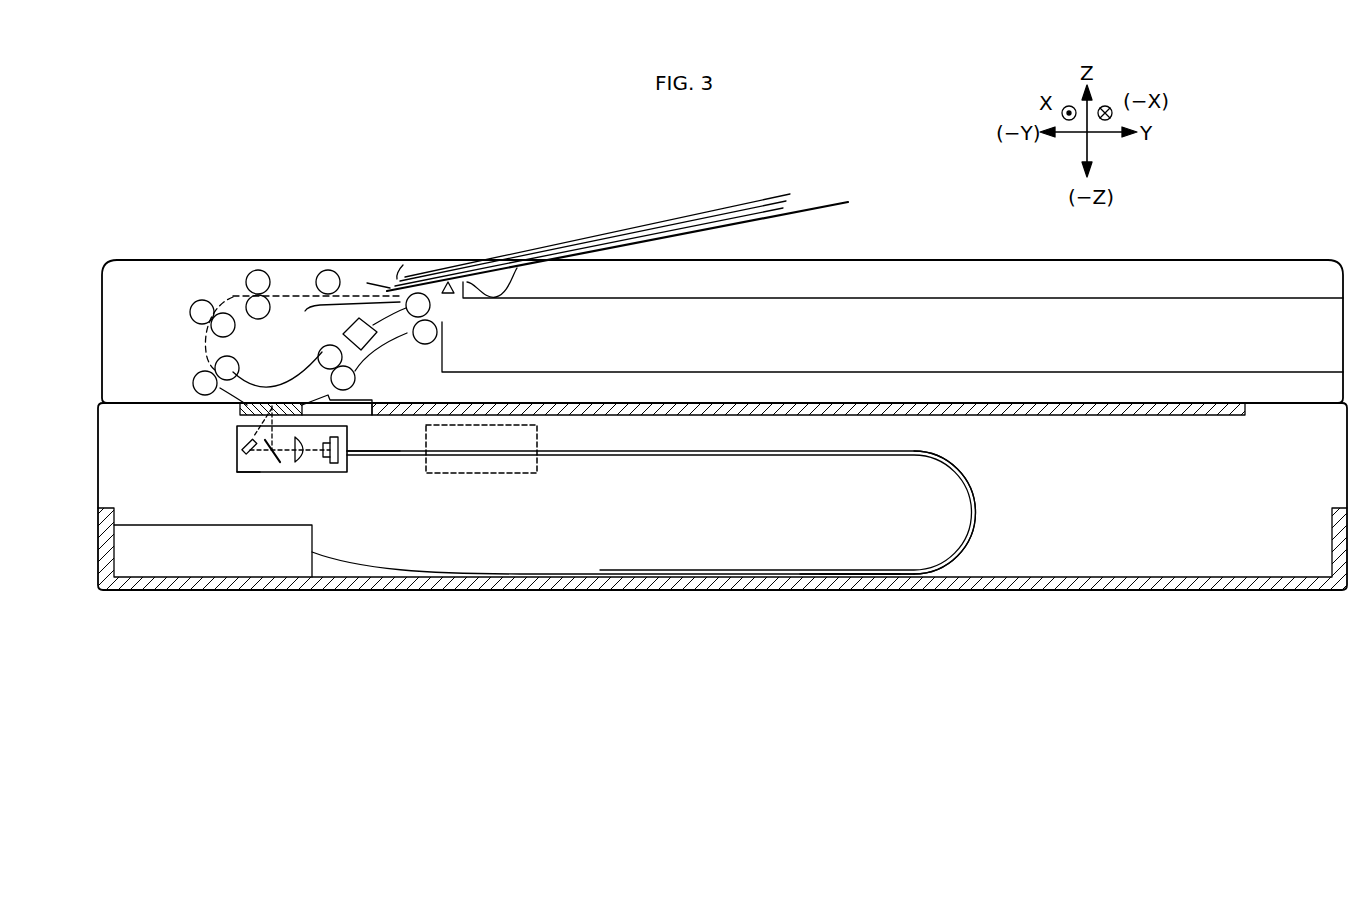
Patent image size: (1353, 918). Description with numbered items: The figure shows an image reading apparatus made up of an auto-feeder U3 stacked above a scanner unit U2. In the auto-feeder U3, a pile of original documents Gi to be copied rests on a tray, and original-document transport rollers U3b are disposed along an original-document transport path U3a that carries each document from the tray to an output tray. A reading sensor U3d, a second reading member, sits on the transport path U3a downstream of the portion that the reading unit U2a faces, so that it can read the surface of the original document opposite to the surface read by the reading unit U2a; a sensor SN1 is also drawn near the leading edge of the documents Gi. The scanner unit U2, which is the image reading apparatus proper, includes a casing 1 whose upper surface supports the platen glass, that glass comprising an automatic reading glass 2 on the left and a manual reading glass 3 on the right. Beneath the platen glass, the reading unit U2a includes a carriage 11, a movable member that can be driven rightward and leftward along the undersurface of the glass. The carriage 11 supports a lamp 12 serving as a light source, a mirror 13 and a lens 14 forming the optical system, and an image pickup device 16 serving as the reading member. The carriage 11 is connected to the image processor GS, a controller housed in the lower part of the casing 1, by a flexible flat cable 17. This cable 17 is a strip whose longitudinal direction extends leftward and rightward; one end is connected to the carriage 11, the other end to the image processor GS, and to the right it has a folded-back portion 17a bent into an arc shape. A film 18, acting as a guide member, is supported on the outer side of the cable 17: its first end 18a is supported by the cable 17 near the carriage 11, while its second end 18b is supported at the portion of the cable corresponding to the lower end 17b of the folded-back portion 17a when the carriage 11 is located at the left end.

The auto-feeder U3 is at (95, 302).
The original-document transport path U3a is at (290, 296).
The original-document transport rollers U3b is at (204, 381).
The reading sensor U3d is at (345, 334).
The original documents Gi is at (610, 228).
The document sensor SN1 is at (448, 294).
The scanner unit U2 is at (94, 460).
The reading unit U2a is at (220, 456).
The casing 1 is at (97, 542).
The automatic reading glass 2 is at (240, 408).
The manual reading glass 3 is at (1102, 417).
The carriage 11 is at (243, 473).
The lamp 12 is at (244, 442).
The mirror 13 is at (272, 463).
The lens 14 is at (302, 463).
The image pickup device 16 is at (333, 465).
The flexible flat cable 17 is at (580, 457).
The folded-back portion 17a is at (956, 481).
The lower end 17b is at (860, 572).
The film 18 is at (590, 450).
The first end 18a is at (349, 449).
The second end 18b is at (858, 578).
The image processor GS is at (205, 556).